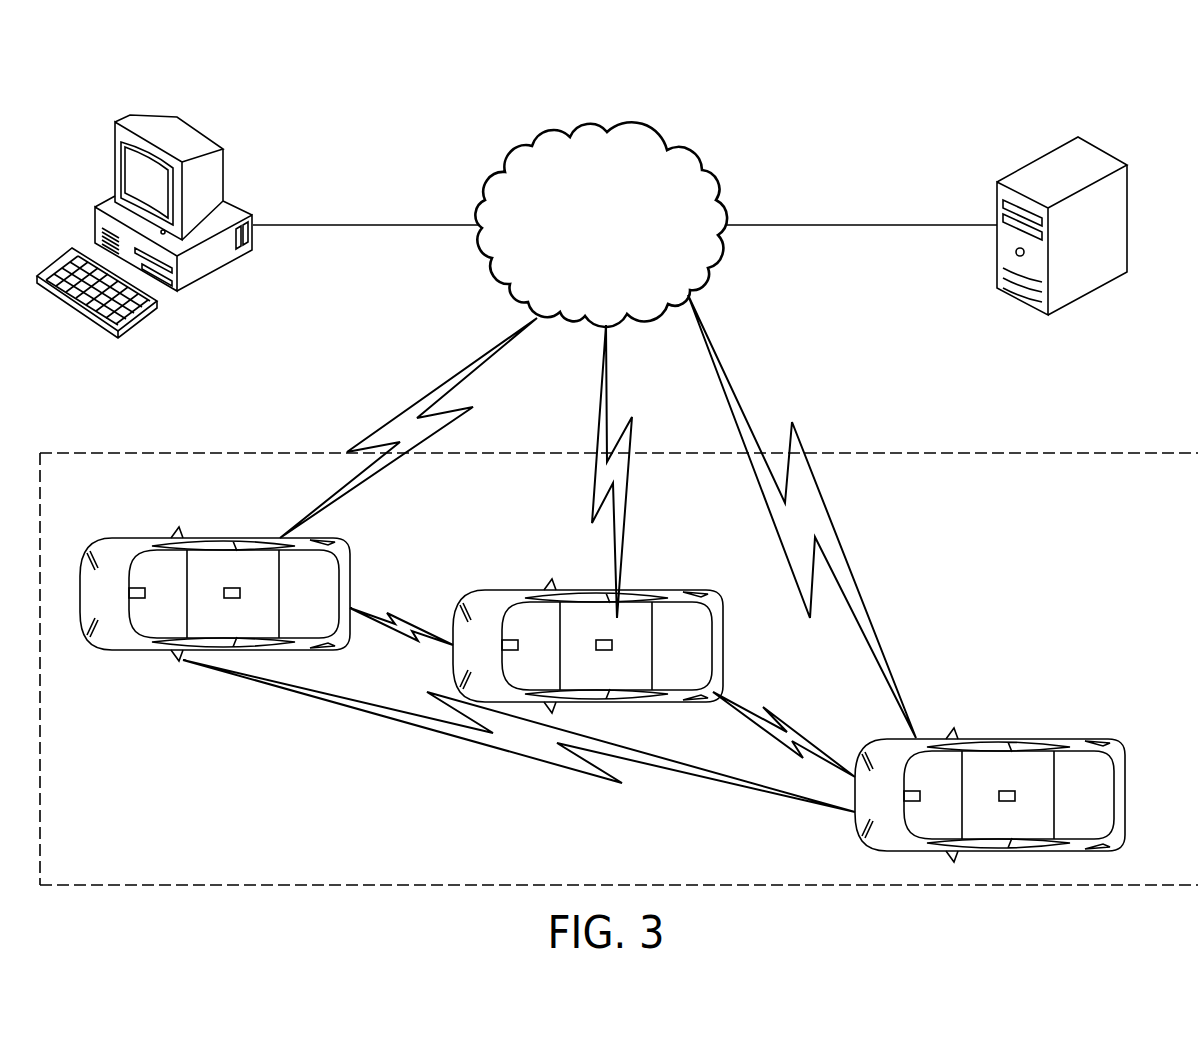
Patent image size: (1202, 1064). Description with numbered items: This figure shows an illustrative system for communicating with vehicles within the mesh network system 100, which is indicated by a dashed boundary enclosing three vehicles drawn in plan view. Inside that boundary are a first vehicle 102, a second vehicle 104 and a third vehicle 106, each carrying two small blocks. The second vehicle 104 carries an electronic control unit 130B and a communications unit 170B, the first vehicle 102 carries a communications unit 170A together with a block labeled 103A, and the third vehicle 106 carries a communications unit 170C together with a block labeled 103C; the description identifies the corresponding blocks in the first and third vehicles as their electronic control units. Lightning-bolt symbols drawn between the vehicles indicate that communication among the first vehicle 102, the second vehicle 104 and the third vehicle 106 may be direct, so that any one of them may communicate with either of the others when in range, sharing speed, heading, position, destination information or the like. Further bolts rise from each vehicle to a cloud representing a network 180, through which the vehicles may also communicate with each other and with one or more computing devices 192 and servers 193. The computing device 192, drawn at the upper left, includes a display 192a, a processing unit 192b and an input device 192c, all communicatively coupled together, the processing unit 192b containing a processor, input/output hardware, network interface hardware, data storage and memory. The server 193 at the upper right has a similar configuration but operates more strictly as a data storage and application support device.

The mesh network system 100 is at (1005, 452).
The first vehicle 102 is at (246, 577).
The second vehicle 104 is at (620, 623).
The third vehicle 106 is at (1016, 774).
The vehicle sensor module of first vehicle 103A is at (137, 588).
The vehicle sensor module of third vehicle 103C is at (912, 791).
The electronic control unit 130B is at (510, 640).
The communications unit 170A is at (232, 588).
The communications unit 170B is at (603, 640).
The communications unit 170C is at (1007, 791).
The network 180 is at (688, 157).
The computing device 192 is at (158, 189).
The display 192a is at (113, 137).
The processing unit 192b is at (200, 265).
The input device 192c is at (130, 320).
The server 193 is at (1117, 141).